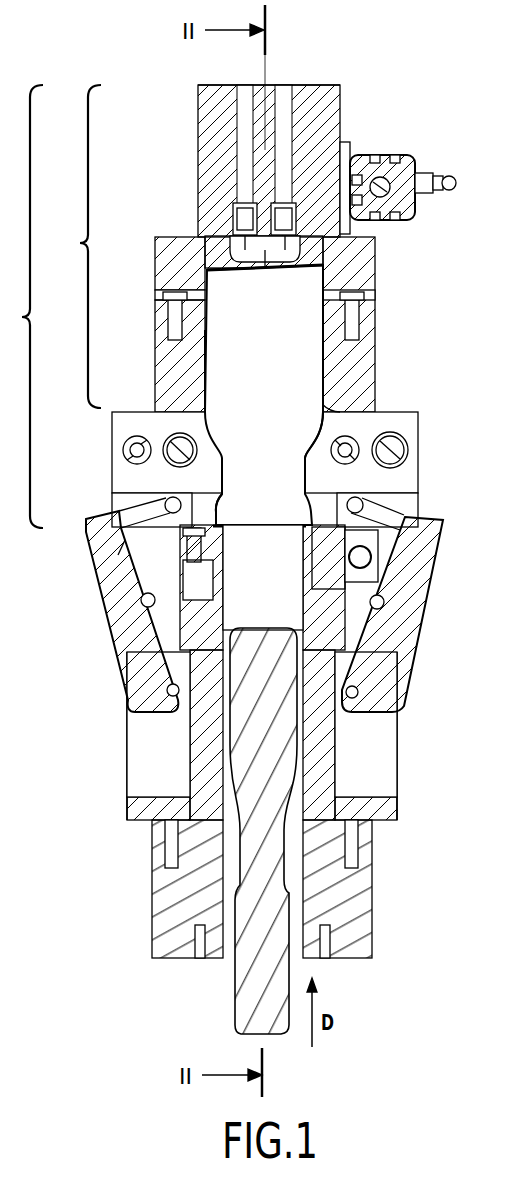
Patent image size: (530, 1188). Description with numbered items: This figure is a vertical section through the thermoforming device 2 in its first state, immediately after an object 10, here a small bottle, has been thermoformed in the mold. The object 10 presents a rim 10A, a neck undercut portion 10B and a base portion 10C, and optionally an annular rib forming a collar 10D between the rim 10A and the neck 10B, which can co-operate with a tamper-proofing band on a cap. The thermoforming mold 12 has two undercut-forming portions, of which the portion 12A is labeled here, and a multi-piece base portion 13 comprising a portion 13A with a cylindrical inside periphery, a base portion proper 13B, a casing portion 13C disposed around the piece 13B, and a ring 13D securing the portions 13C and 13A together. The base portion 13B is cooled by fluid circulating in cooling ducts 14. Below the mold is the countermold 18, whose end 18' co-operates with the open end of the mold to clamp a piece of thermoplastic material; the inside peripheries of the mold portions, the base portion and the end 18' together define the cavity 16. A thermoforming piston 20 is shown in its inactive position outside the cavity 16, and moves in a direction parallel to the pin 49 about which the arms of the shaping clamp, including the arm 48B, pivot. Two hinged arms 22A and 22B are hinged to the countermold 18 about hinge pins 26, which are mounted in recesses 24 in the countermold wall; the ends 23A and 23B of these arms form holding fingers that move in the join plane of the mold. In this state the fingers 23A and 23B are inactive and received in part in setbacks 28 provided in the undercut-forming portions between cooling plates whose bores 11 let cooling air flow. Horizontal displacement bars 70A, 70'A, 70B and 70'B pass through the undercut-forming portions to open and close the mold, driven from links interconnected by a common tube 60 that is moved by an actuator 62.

The device 2 is at (22, 306).
The base portion 13 is at (75, 246).
The portion with cylindrical inside periphery 13A is at (162, 371).
The base portion proper 13B is at (270, 278).
The casing portion 13C is at (173, 244).
The ring 13D is at (156, 297).
The cooling ducts 14 is at (284, 100).
The common tube 60 is at (383, 176).
The actuator 62 is at (416, 167).
The object 10 is at (222, 324).
The rim 10A is at (224, 518).
The neck undercut portion 10B is at (312, 448).
The base portion 10C is at (214, 392).
The collar 10D is at (226, 491).
The undercut-forming portion 12A is at (120, 412).
The thermoforming mold 12 is at (333, 526).
The cavity 16 is at (332, 432).
The horizontal displacement bar 70B is at (124, 445).
The horizontal displacement bar 70A is at (164, 466).
The horizontal displacement bar 70'B is at (407, 428).
The horizontal displacement bar 70'A is at (428, 446).
The setbacks 28 is at (120, 499).
The finger 23A is at (100, 526).
The finger 23B is at (420, 503).
The bores 11 is at (118, 566).
The pin 49 is at (202, 552).
The end of countermold 18' is at (263, 577).
The thermoforming piston 20 is at (281, 632).
The arm of shaping clamp 48B is at (377, 560).
The hinged arm 22A is at (107, 610).
The hinged arm 22B is at (410, 611).
The countermold 18 is at (308, 741).
The hinge pins 26 is at (167, 692).
The recesses 24 is at (378, 751).